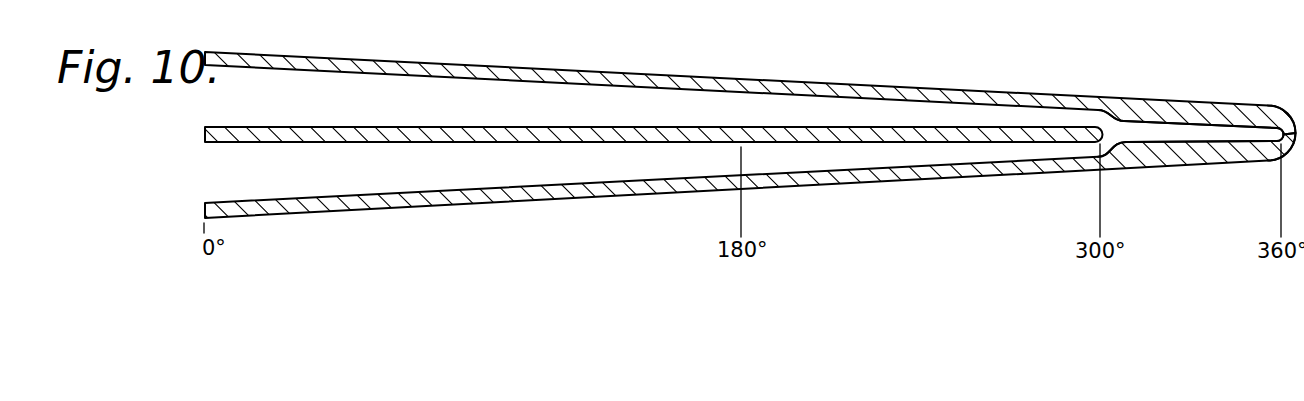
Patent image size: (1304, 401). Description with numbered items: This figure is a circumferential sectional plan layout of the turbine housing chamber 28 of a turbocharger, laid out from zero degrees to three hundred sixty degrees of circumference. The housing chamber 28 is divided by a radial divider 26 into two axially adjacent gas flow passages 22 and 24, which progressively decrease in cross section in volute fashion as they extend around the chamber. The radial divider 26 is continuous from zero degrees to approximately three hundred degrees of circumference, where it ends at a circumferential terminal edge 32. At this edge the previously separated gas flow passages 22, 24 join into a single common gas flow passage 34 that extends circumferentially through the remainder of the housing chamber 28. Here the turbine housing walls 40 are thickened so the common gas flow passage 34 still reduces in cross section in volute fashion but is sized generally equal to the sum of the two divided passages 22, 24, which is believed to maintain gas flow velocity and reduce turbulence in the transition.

The gas flow passage 22 is at (228, 172).
The gas flow passage 24 is at (224, 105).
The radial divider 26 is at (213, 133).
The turbine housing chamber 28 is at (366, 108).
The circumferential terminal edge 32 is at (1118, 120).
The common gas flow passage 34 is at (1253, 137).
The turbine housing walls 40 is at (1223, 150).